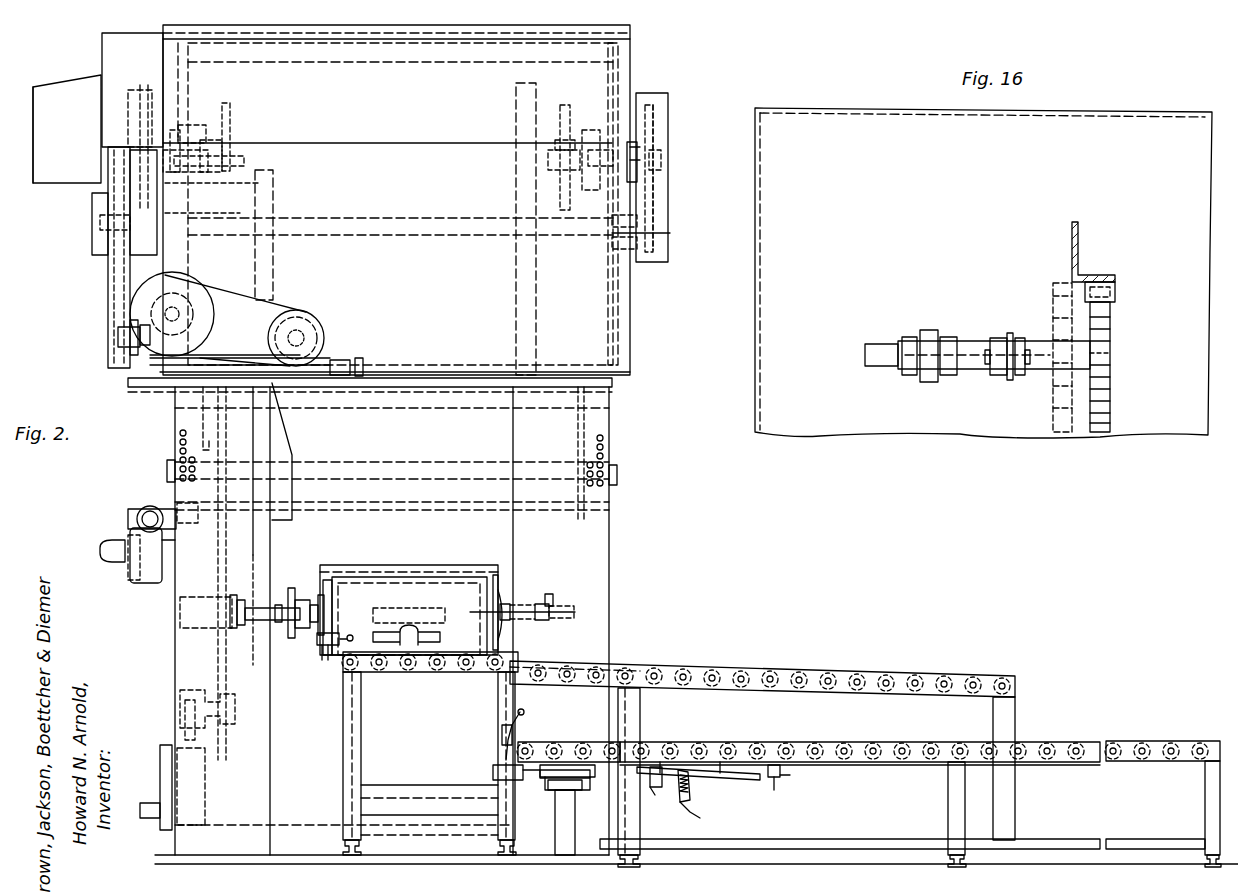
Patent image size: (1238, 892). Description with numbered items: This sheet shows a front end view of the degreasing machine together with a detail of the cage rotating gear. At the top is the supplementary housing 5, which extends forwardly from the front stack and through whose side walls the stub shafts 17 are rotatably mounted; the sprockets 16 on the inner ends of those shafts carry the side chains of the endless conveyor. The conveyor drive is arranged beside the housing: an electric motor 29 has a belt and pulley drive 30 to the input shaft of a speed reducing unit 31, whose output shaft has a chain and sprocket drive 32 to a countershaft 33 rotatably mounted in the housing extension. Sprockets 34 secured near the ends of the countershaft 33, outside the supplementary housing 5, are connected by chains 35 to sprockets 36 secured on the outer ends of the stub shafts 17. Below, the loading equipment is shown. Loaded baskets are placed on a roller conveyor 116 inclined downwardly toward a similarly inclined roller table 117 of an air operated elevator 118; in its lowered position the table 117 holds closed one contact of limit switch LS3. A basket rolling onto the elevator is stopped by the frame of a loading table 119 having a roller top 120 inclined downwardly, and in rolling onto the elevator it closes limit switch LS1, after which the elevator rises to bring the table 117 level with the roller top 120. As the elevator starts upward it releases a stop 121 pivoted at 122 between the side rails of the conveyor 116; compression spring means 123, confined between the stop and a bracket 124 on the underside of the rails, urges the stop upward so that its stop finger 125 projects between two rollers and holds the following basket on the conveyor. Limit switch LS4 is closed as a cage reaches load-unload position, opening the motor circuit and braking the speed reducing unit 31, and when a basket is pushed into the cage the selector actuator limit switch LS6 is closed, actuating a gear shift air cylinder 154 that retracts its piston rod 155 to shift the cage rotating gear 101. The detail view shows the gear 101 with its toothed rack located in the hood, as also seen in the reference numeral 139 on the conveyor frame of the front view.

In FIG. 2, the supplementary housing 5 is at (398, 110).
In FIG. 2, the sprockets 16 is at (232, 112).
In FIG. 2, the stub shafts 17 is at (600, 135).
In FIG. 2, the electric motor 29 is at (312, 336).
In FIG. 2, the belt and pulley drive 30 is at (250, 285).
In FIG. 2, the speed reducing unit 31 is at (178, 292).
In FIG. 2, the chain and sprocket drive 32 is at (116, 330).
In FIG. 2, the countershaft 33 is at (211, 176).
In FIG. 2, the sprockets 34 is at (110, 250).
In FIG. 2, the chains 35 is at (656, 187).
In FIG. 2, the sprockets 36 is at (142, 90).
In FIG. 2, the cage rotating gear 101 is at (298, 590).
In FIG. 16, the cage rotating gear 101 is at (1063, 390).
In FIG. 2, the roller conveyor 116 is at (928, 742).
In FIG. 2, the roller table 117 is at (568, 742).
In FIG. 2, the air operated elevator 118 is at (555, 840).
In FIG. 2, the loading table 119 is at (343, 730).
In FIG. 2, the roller top 120 is at (415, 672).
In FIG. 2, the stop 121 is at (775, 778).
In FIG. 2, the pivot 122 is at (778, 745).
In FIG. 2, the compression spring means 123 is at (692, 788).
In FIG. 2, the bracket 124 is at (711, 815).
In FIG. 2, the stop finger 125 is at (672, 785).
In FIG. 2, the upper roller conveyor 139 is at (922, 676).
In FIG. 2, the gear shift air cylinder 154 is at (240, 595).
In FIG. 2, the piston rod 155 is at (272, 630).
In FIG. 2, the limit switch LS1 is at (503, 733).
In FIG. 2, the limit switch LS3 is at (493, 770).
In FIG. 2, the limit switch LS4 is at (549, 596).
In FIG. 2, the selector actuator limit switch LS6 is at (350, 634).